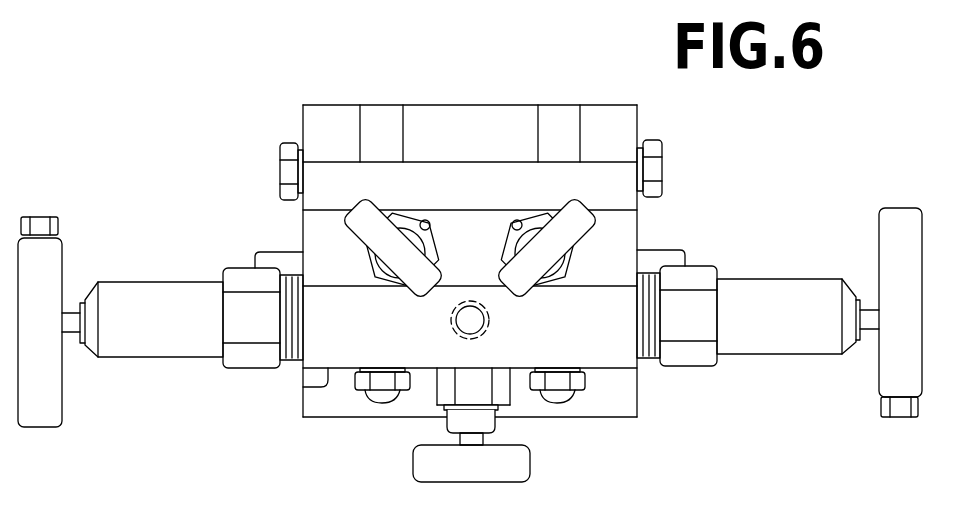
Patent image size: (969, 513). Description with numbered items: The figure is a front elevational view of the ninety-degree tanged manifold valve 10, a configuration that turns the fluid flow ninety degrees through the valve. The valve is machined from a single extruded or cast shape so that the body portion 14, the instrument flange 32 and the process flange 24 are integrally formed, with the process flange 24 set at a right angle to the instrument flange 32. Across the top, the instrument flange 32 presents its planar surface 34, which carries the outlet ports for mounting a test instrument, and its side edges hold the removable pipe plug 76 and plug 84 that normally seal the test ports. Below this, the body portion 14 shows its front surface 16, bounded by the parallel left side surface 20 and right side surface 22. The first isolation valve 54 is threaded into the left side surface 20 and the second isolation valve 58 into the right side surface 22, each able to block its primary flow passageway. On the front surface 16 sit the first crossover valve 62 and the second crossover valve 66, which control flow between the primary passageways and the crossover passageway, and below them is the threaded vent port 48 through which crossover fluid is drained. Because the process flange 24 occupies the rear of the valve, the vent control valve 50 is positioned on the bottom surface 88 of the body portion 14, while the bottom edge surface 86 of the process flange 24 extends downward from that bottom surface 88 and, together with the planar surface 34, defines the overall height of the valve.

The manifold valve 10 is at (258, 84).
The body portion 14 is at (618, 255).
The front surface 16 is at (470, 227).
The left side surface 20 is at (303, 232).
The right side surface 22 is at (640, 222).
The process flange 24 is at (613, 399).
The instrument flange 32 is at (448, 115).
The planar surface 34 is at (523, 105).
The vent port 48 is at (472, 322).
The vent control valve 50 is at (467, 385).
The first isolation valve 54 is at (160, 322).
The second isolation valve 58 is at (779, 312).
The first crossover valve 62 is at (393, 250).
The second crossover valve 66 is at (557, 280).
The pipe plug 76 is at (290, 171).
The removable plug 84 is at (652, 169).
The bottom edge surface 86 is at (552, 417).
The bottom surface 88 is at (318, 390).